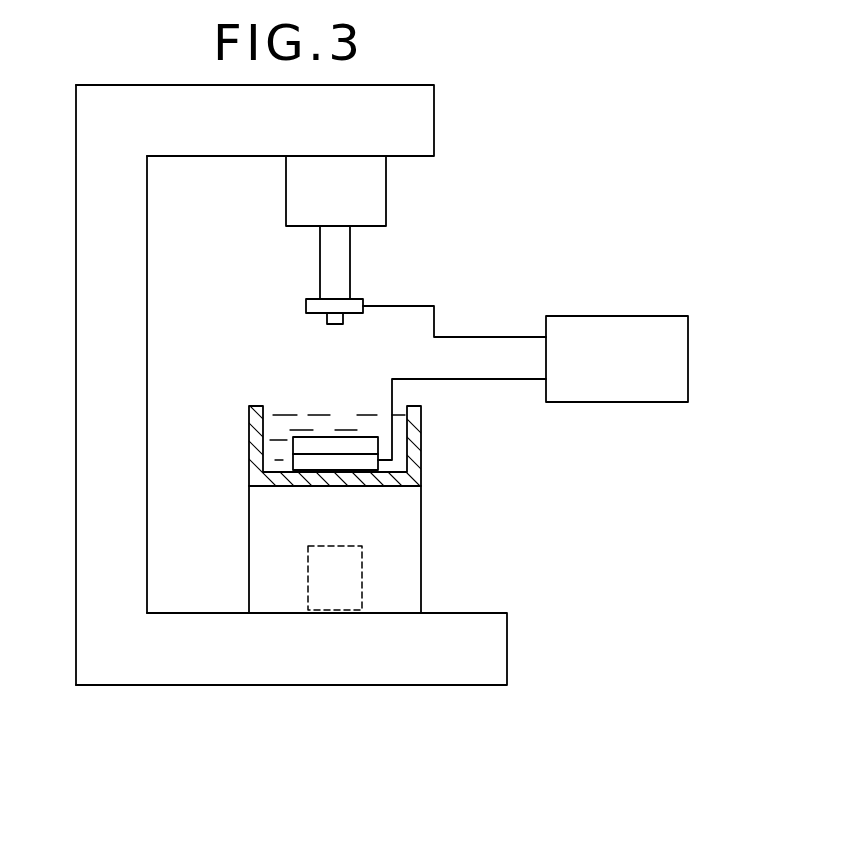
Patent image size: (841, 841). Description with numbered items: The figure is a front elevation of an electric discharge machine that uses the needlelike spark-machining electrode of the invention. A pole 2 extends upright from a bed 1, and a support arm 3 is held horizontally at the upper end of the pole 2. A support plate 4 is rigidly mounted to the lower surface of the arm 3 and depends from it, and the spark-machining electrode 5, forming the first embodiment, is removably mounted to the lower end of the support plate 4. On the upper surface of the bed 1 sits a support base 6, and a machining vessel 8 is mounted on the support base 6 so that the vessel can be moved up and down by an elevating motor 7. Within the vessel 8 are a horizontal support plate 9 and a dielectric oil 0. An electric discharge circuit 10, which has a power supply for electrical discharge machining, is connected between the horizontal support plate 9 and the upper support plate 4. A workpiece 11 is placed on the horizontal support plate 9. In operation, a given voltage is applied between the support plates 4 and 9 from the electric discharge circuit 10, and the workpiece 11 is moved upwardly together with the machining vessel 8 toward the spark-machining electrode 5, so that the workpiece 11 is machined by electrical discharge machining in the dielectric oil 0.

The bed 1 is at (363, 677).
The pole 2 is at (90, 268).
The support arm 3 is at (428, 102).
The support plate 4 is at (320, 257).
The spark-machining electrode 5 is at (343, 321).
The support base 6 is at (258, 565).
The elevating motor 7 is at (363, 578).
The machining vessel 8 is at (421, 432).
The horizontal support plate 9 is at (365, 465).
The electric discharge circuit 10 is at (687, 373).
The workpiece 11 is at (308, 447).
The dielectric oil 0 is at (292, 412).